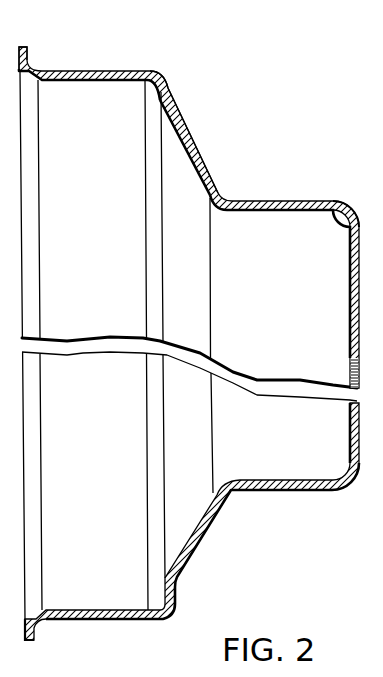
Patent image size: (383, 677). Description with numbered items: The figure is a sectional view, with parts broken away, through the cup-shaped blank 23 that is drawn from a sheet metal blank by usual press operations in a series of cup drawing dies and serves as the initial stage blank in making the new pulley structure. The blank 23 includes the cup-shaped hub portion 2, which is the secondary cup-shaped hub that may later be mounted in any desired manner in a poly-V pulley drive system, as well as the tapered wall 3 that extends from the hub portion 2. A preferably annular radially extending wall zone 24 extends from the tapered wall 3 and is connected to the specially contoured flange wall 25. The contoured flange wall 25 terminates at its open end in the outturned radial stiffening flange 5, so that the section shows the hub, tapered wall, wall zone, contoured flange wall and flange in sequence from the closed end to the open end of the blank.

The cup-shaped hub portion 2 is at (303, 200).
The tapered wall 3 is at (202, 160).
The outturned radial flange 5 is at (28, 53).
The cup-shaped blank 23 is at (173, 71).
The radially extending wall zone 24 is at (170, 97).
The contoured flange wall 25 is at (95, 66).